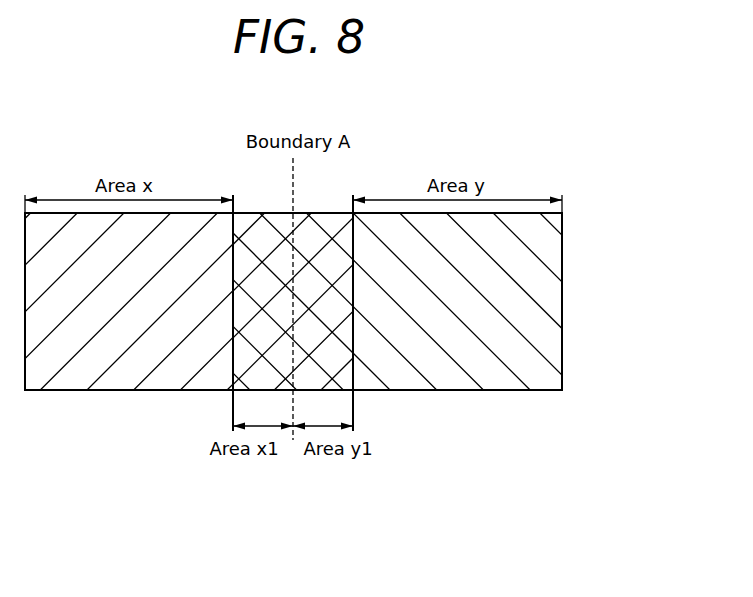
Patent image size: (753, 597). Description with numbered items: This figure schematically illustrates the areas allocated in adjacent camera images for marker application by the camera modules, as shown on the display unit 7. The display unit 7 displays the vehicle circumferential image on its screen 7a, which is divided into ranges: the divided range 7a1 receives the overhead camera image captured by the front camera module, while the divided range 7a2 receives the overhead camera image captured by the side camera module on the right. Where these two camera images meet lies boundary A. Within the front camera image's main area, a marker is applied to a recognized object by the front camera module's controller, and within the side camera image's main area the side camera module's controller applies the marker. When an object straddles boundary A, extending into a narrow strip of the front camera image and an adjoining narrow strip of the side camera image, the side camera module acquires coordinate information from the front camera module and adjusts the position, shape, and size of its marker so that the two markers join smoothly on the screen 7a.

The display unit 7 is at (358, 339).
The screen 7a is at (358, 339).
The divided range 7a1 is at (70, 380).
The divided range 7a2 is at (458, 380).